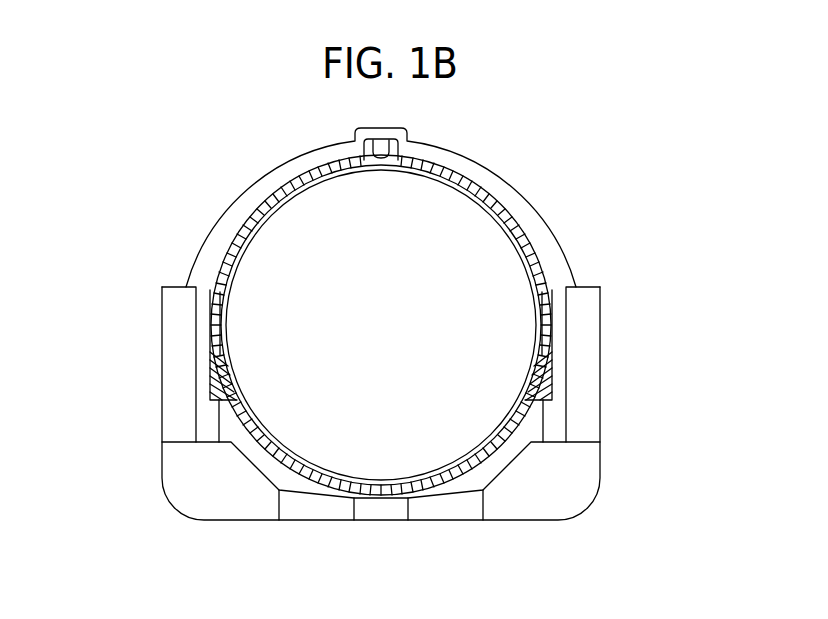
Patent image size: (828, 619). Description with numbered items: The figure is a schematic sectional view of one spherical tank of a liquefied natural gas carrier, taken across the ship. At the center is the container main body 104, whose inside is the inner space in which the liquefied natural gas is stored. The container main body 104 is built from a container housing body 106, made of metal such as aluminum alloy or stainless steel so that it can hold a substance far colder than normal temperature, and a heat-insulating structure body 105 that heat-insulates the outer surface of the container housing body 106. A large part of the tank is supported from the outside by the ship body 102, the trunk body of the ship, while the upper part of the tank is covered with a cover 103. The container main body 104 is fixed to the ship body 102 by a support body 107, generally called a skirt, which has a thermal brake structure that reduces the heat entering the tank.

The ship body 102 is at (588, 470).
The cover 103 is at (275, 177).
The container main body 104 is at (500, 195).
The heat-insulating structure body 105 is at (224, 254).
The container housing body 106 is at (534, 253).
The support body 107 is at (228, 428).